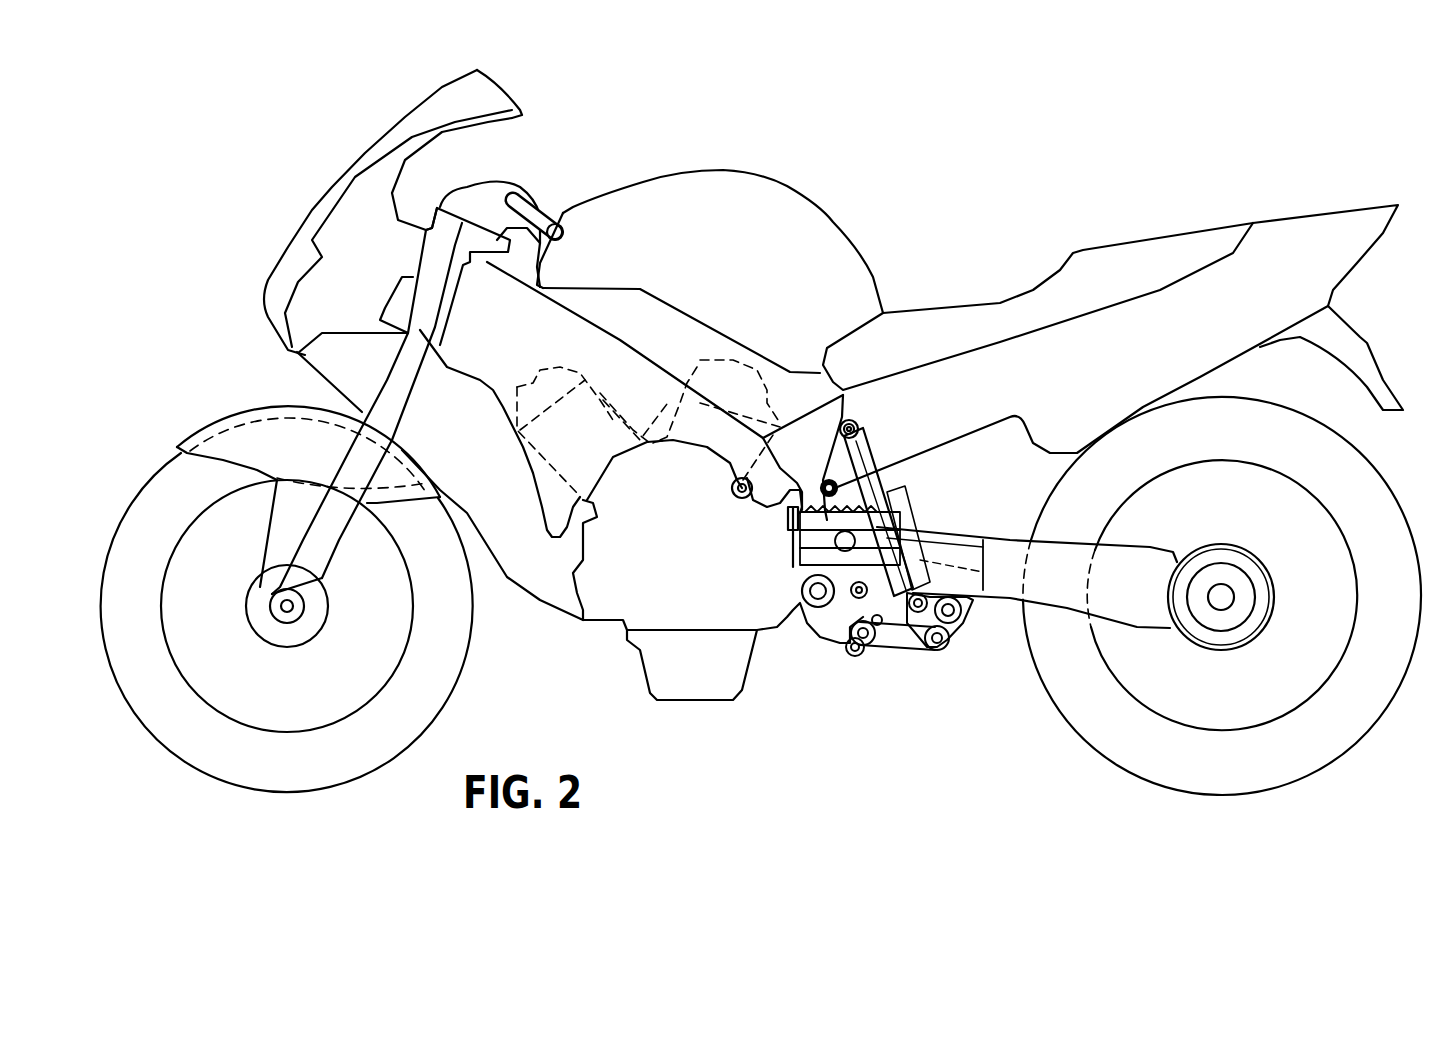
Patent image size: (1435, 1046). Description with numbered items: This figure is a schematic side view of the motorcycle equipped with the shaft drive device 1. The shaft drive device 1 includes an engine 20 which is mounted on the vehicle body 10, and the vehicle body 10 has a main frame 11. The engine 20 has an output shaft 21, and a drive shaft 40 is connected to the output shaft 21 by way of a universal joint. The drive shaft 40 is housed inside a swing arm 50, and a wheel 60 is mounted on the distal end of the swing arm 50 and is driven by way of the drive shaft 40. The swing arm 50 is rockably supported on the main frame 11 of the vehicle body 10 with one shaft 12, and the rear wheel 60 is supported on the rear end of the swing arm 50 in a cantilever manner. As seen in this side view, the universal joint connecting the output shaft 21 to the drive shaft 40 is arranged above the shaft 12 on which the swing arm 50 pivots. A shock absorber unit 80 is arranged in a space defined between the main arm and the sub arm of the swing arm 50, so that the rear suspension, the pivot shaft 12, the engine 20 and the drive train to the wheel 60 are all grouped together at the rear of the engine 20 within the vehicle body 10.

The shaft drive device 1 is at (890, 604).
The vehicle body 10 is at (573, 330).
The main frame 11 is at (823, 627).
The shaft 12 is at (797, 597).
The engine 20 is at (640, 600).
The output shaft 21 is at (800, 538).
The drive shaft 40 is at (947, 533).
The swing arm 50 is at (1138, 543).
The wheel 60 is at (1083, 715).
The shock absorber unit 80 is at (877, 450).